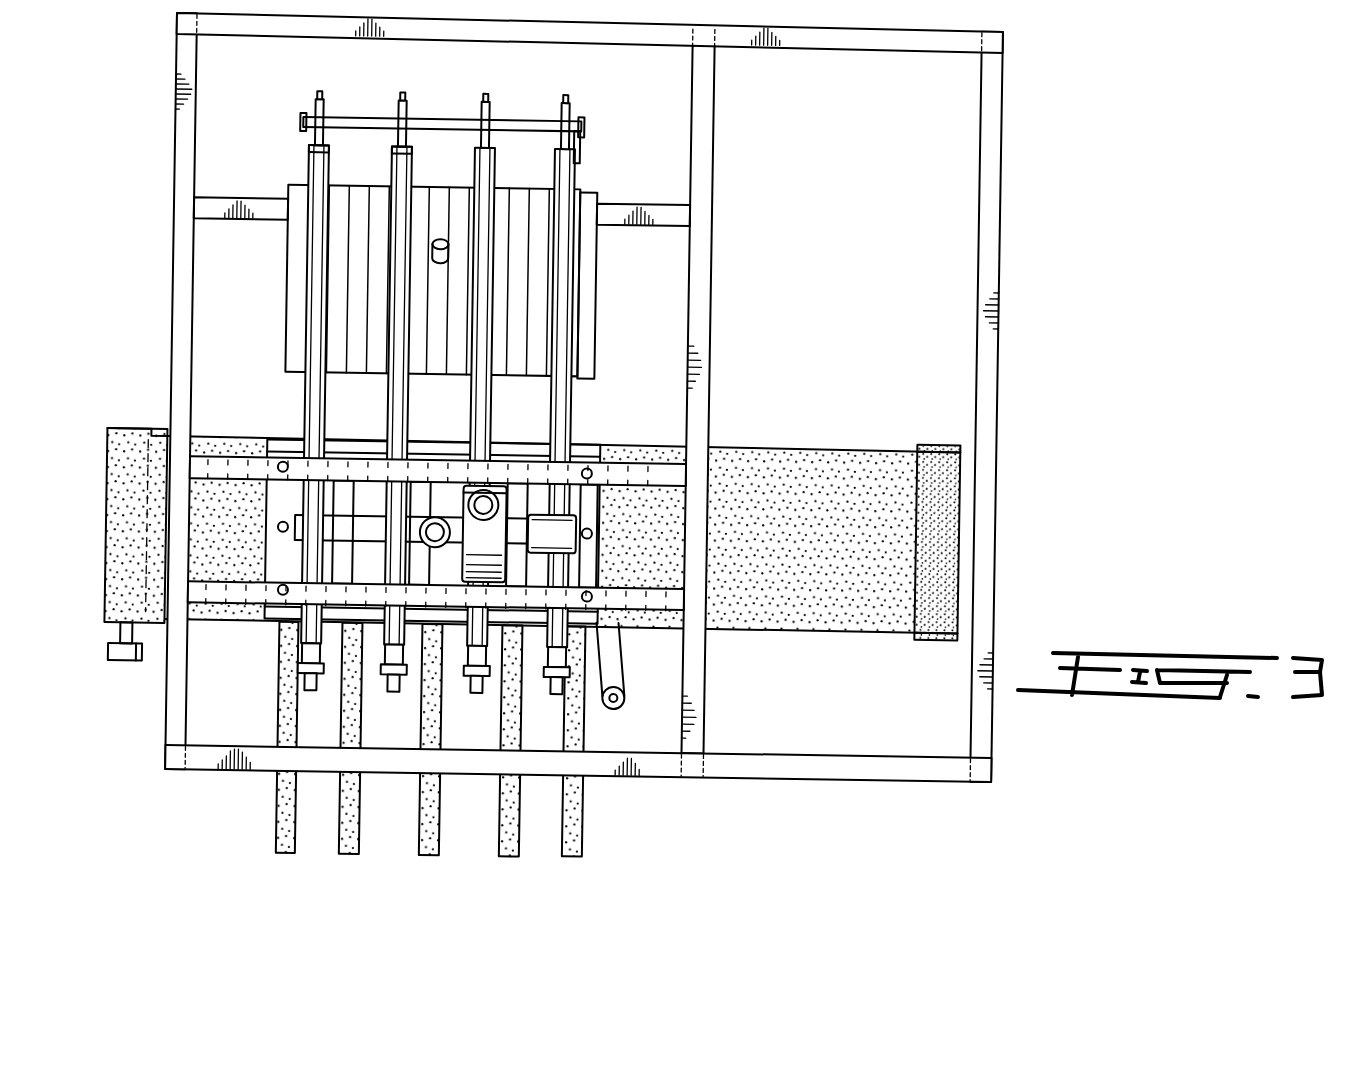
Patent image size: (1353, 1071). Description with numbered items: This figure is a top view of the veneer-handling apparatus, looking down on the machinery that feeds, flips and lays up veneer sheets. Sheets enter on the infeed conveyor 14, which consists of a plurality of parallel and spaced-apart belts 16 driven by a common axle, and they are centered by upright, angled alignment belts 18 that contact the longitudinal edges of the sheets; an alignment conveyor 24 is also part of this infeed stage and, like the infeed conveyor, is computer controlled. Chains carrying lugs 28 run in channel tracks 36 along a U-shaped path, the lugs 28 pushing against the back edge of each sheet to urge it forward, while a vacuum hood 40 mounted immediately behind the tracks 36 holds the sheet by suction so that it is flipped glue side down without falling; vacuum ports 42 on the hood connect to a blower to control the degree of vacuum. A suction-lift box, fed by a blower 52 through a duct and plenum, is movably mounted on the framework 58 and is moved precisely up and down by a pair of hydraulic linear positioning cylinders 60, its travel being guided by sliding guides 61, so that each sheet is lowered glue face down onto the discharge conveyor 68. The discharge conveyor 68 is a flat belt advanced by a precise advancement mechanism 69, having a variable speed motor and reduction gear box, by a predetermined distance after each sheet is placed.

The infeed conveyor 14 is at (284, 771).
The belts 16 is at (309, 806).
The alignment belts 18 is at (634, 671).
The alignment conveyor 24 is at (445, 372).
The lugs 28 is at (567, 92).
The channel tracks 36 is at (394, 157).
The vacuum hood 40 is at (600, 347).
The vacuum ports 42 is at (444, 235).
The blower 52 is at (492, 484).
The framework 58 is at (715, 300).
The hydraulic linear positioning cylinders 60 is at (597, 522).
The sliding guides 61 is at (290, 460).
The discharge conveyor 68 is at (954, 471).
The advancement mechanism 69 is at (140, 662).